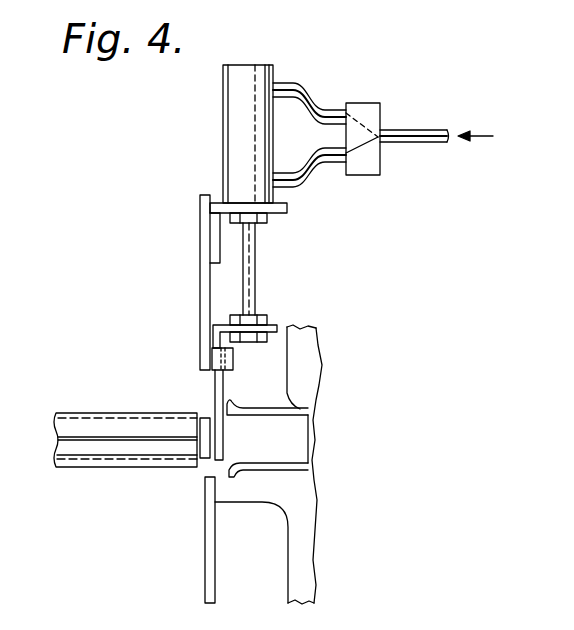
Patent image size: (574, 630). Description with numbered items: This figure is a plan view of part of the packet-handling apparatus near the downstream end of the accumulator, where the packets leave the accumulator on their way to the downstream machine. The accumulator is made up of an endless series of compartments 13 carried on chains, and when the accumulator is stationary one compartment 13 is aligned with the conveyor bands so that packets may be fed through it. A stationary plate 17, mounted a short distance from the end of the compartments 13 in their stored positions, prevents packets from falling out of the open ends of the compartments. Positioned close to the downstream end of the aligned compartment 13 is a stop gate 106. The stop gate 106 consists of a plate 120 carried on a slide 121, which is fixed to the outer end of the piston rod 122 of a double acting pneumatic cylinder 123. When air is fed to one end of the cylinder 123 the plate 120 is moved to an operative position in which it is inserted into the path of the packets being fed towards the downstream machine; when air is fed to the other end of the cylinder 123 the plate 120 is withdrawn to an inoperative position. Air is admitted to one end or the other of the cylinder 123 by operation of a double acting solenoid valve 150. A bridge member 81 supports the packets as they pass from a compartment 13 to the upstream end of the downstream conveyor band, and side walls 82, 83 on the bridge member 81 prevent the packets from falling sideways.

The compartment 13 is at (83, 424).
The stationary plate 17 is at (200, 212).
The bridge member 81 is at (242, 490).
The side wall 82 is at (297, 410).
The side wall 83 is at (297, 467).
The stop gate 106 is at (168, 402).
The plate 120 is at (207, 462).
The slide 121 is at (217, 392).
The piston rod 122 is at (250, 268).
The double acting pneumatic cylinder 123 is at (237, 73).
The double acting solenoid valve 150 is at (386, 155).